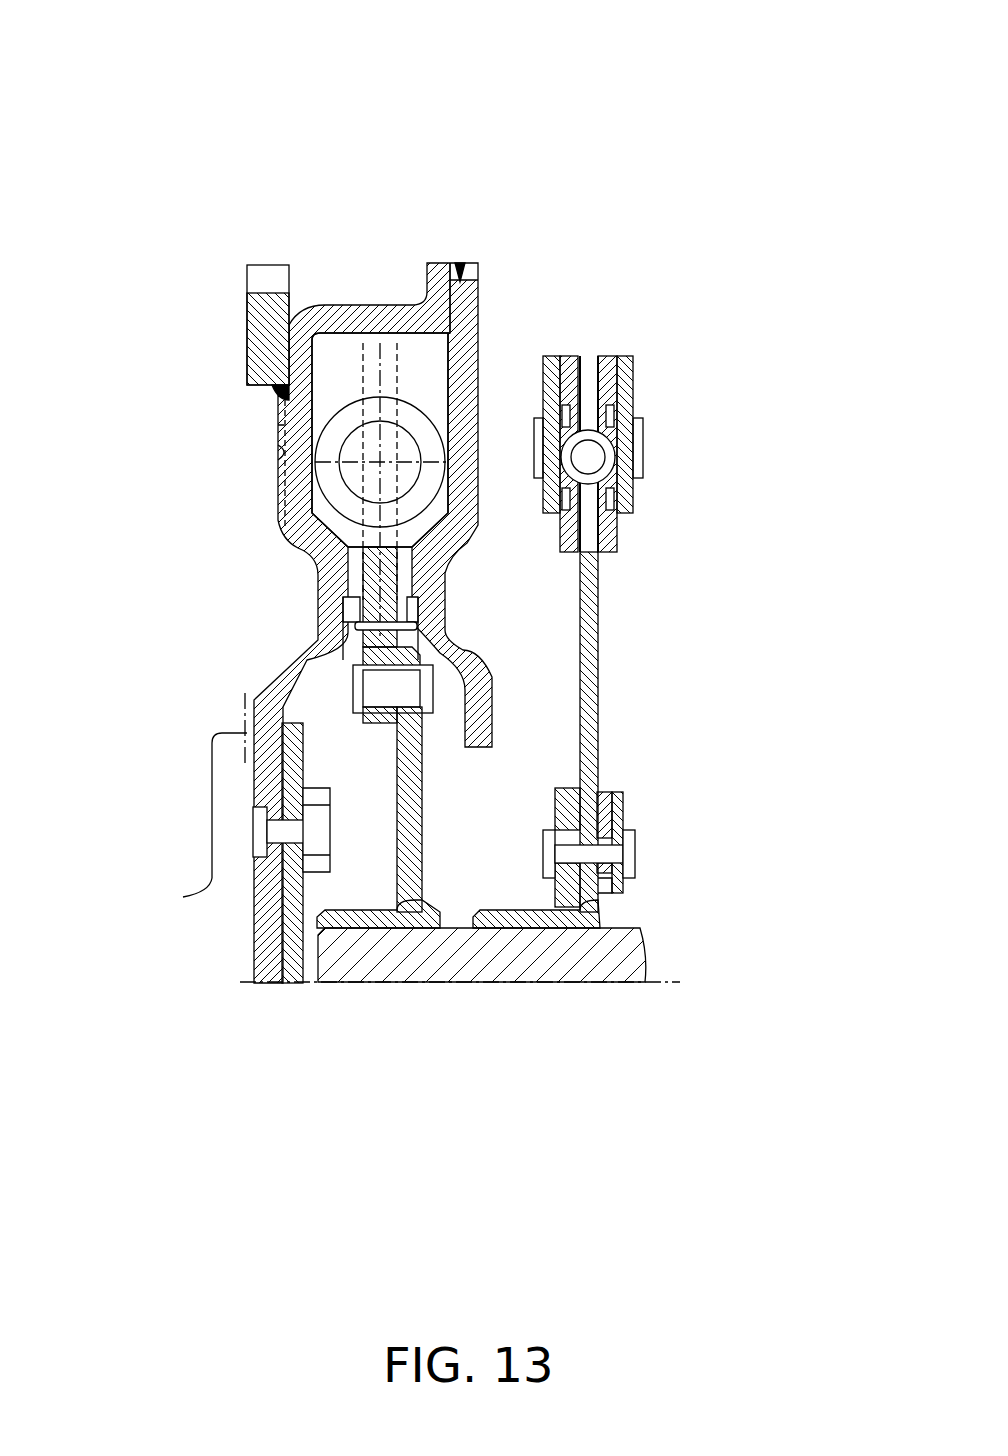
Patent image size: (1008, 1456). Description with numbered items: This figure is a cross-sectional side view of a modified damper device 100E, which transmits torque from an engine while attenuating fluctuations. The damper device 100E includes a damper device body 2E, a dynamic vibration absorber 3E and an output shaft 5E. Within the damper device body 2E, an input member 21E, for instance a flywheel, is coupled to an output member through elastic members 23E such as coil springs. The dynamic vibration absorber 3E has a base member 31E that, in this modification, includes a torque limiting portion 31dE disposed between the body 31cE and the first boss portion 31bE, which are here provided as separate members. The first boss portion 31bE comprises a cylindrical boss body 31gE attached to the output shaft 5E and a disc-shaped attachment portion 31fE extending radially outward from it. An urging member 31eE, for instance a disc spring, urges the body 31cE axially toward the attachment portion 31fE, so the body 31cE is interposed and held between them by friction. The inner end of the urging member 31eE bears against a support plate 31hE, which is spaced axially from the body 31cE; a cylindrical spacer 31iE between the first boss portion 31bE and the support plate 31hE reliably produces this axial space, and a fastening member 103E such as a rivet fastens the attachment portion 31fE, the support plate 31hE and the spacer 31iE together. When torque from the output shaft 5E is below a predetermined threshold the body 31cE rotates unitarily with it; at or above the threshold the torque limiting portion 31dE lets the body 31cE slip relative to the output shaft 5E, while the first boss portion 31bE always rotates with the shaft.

The damper device 100E is at (421, 138).
The damper device body 2E is at (362, 270).
The dynamic vibration absorber 3E is at (679, 385).
The output shaft 5E is at (484, 990).
The input member 21E is at (270, 465).
The elastic member 23E is at (333, 497).
The base member 31E is at (603, 696).
The first boss portion 31bE is at (549, 808).
The body 31cE is at (596, 628).
The torque limiting portion 31dE is at (633, 798).
The urging member 31eE is at (607, 792).
The attachment portion 31fE is at (568, 786).
The boss body 31gE is at (505, 910).
The support plate 31hE is at (612, 892).
The spacer 31iE is at (598, 880).
The fastening member 103E is at (635, 840).